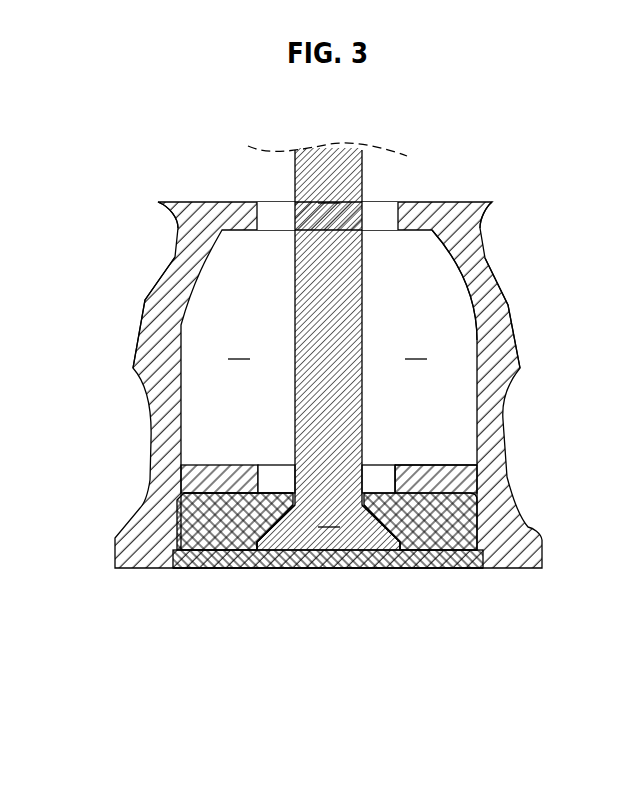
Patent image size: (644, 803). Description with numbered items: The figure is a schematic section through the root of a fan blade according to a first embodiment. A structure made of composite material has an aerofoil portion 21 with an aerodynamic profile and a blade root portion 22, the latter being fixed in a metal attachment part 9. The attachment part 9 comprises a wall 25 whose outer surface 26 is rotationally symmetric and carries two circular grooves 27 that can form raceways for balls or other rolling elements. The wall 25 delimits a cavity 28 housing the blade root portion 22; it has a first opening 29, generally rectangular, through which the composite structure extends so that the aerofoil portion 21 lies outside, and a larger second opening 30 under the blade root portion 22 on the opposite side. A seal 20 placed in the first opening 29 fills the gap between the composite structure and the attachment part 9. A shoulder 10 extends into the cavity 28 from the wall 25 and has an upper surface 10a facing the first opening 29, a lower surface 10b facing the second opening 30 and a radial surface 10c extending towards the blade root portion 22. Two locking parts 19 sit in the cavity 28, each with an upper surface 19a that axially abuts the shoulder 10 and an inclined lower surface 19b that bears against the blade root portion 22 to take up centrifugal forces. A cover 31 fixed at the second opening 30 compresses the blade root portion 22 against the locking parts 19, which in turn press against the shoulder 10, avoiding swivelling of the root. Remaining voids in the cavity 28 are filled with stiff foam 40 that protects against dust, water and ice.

The attachment part 9 is at (472, 218).
The shoulder 10 is at (213, 482).
The upper surface of the shoulder 10a is at (434, 458).
The lower surface of the shoulder 10b is at (438, 515).
The radial surface of the shoulder 10c is at (388, 480).
The locking part 19 is at (226, 537).
The upper surface of the locking part 19a is at (231, 483).
The lower surface of the locking part 19b is at (286, 528).
The seal 20 is at (379, 200).
The aerofoil portion 21 is at (328, 349).
The blade root portion 22 is at (328, 527).
The wall 25 is at (491, 327).
The outer surface 26 is at (135, 330).
The circular groove 27 is at (144, 252).
The cavity 28 is at (420, 287).
The first opening 29 is at (265, 216).
The second opening 30 is at (188, 560).
The cover 31 is at (360, 570).
The foam 40 is at (329, 390).